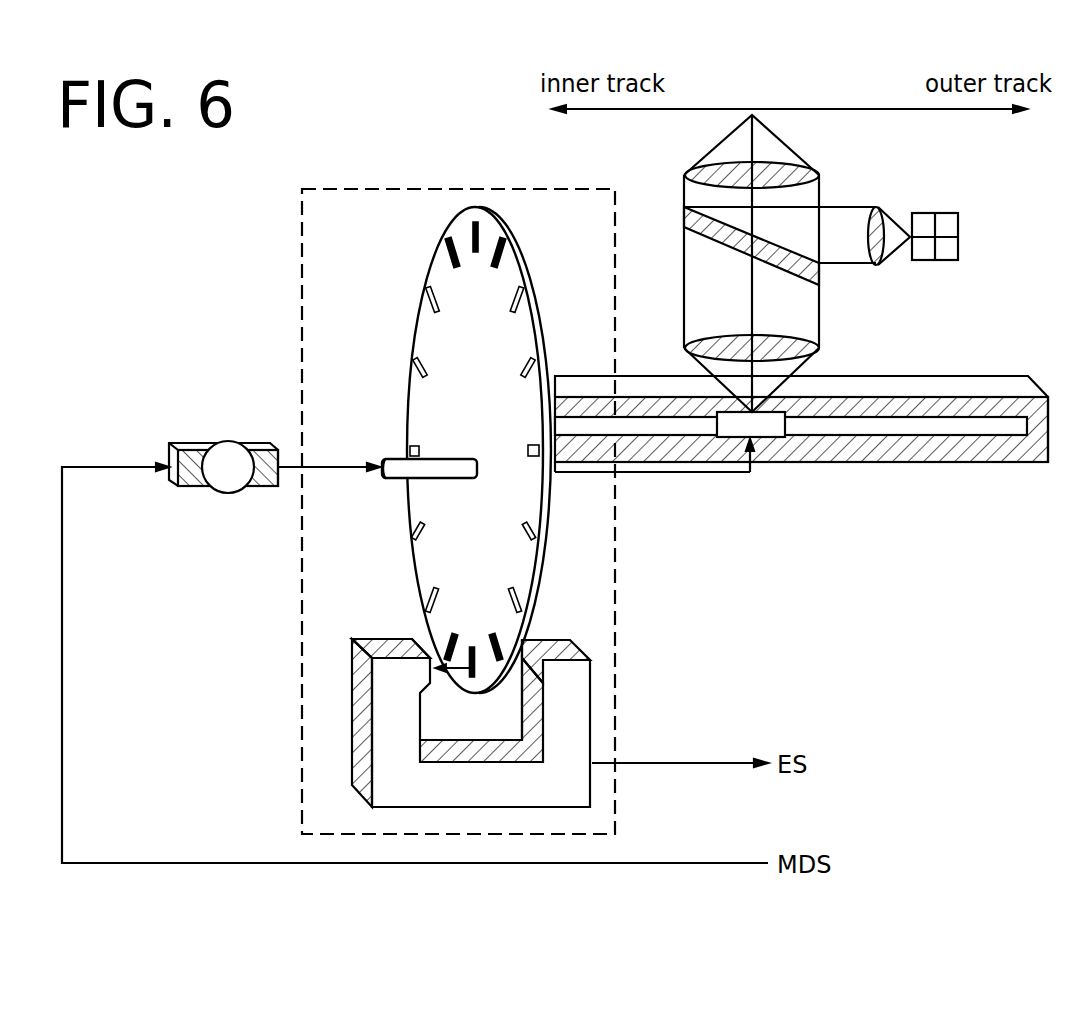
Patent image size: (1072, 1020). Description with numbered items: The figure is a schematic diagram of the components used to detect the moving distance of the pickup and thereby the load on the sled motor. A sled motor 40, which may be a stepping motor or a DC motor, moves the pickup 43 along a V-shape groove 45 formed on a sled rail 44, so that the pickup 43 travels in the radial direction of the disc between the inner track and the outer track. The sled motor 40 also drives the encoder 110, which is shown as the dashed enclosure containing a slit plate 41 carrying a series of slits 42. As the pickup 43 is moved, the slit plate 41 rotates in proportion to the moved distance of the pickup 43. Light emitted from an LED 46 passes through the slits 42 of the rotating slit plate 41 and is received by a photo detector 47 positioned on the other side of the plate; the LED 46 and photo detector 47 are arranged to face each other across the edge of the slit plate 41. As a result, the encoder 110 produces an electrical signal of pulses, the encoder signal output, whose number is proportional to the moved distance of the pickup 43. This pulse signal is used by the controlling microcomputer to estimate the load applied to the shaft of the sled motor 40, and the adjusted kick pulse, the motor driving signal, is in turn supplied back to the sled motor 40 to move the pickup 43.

The encoder 110 is at (302, 266).
The sled motor 40 is at (222, 443).
The slit plate 41 is at (408, 380).
The slits 42 is at (428, 303).
The pickup 43 is at (822, 190).
The sled rail 44 is at (982, 376).
The V-shape groove 45 is at (903, 437).
The LED 46 is at (557, 640).
The photo detector 47 is at (390, 640).